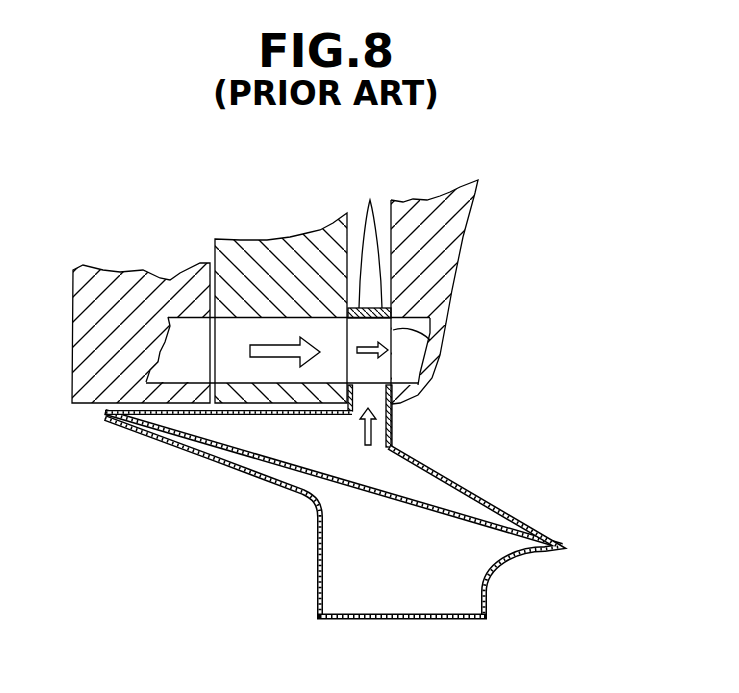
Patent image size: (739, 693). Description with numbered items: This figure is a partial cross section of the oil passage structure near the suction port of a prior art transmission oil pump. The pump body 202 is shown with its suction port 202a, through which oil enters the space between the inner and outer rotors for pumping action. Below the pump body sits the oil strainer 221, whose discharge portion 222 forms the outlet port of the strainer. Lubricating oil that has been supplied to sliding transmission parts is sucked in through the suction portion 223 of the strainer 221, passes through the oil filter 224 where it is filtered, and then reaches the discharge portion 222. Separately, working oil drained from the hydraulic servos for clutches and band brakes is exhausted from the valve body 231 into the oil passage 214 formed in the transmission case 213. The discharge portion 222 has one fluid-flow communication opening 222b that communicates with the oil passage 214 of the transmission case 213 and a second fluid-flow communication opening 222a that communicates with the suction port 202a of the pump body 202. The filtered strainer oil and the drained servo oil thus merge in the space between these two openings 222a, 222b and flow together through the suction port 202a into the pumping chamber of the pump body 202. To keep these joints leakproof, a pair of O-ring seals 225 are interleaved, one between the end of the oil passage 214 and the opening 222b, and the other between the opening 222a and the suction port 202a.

The pump body 202 is at (443, 205).
The suction port 202a is at (410, 343).
The transmission case 213 is at (273, 247).
The oil passage 214 is at (258, 370).
The oil strainer 221 is at (252, 501).
The discharge portion 222 is at (388, 367).
The fluid-flow communication opening 222a is at (393, 318).
The fluid-flow communication opening 222b is at (389, 400).
The suction portion 223 is at (403, 619).
The oil filter 224 is at (473, 520).
The O-ring seal 225 is at (373, 240).
The valve body 231 is at (133, 278).